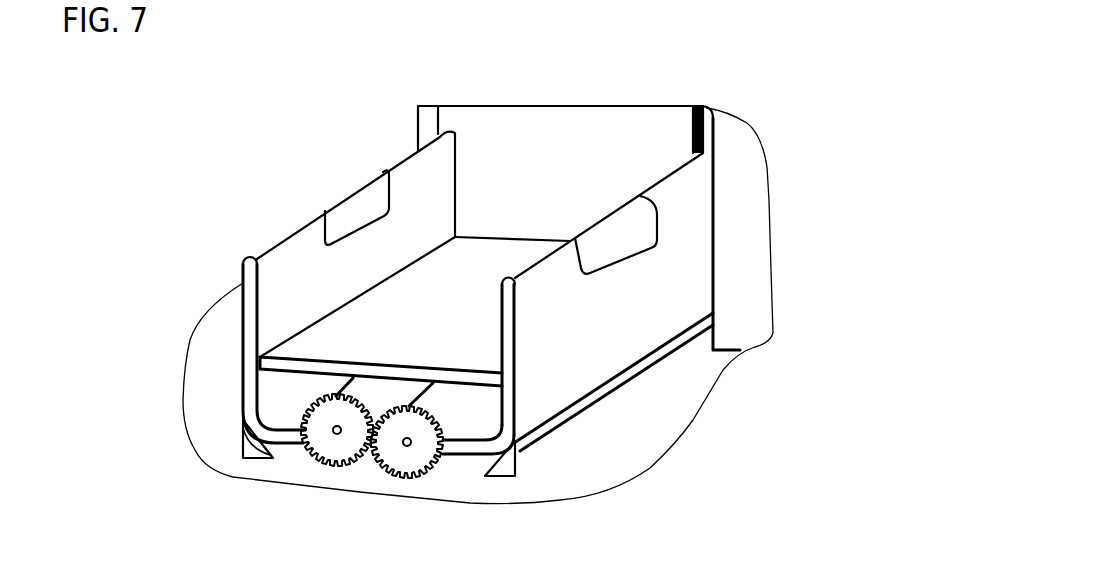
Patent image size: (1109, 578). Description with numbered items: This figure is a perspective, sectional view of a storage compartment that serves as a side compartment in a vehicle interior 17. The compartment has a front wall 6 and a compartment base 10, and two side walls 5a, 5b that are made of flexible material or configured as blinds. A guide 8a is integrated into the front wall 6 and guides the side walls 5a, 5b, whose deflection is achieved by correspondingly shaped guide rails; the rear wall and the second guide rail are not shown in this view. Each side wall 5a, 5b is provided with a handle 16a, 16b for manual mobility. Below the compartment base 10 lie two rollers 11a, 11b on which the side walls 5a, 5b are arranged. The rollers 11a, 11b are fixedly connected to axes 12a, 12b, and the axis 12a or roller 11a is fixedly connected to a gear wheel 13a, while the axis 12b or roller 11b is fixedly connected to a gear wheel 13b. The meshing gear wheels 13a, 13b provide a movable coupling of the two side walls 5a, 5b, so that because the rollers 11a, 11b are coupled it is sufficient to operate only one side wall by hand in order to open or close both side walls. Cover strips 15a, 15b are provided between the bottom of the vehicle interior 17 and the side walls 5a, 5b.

The side wall 5a is at (692, 247).
The side wall 5b is at (297, 257).
The front wall 6 is at (559, 123).
The guide 8a is at (707, 115).
The compartment base 10 is at (310, 347).
The roller 11a is at (450, 413).
The roller 11b is at (363, 395).
The axis 12a is at (407, 442).
The axis 12b is at (333, 433).
The gear wheel 13a is at (437, 465).
The gear wheel 13b is at (340, 468).
The cover strip 15a is at (590, 410).
The cover strip 15b is at (243, 443).
The handle 16a is at (612, 233).
The handle 16b is at (357, 207).
The vehicle interior 17 is at (690, 385).